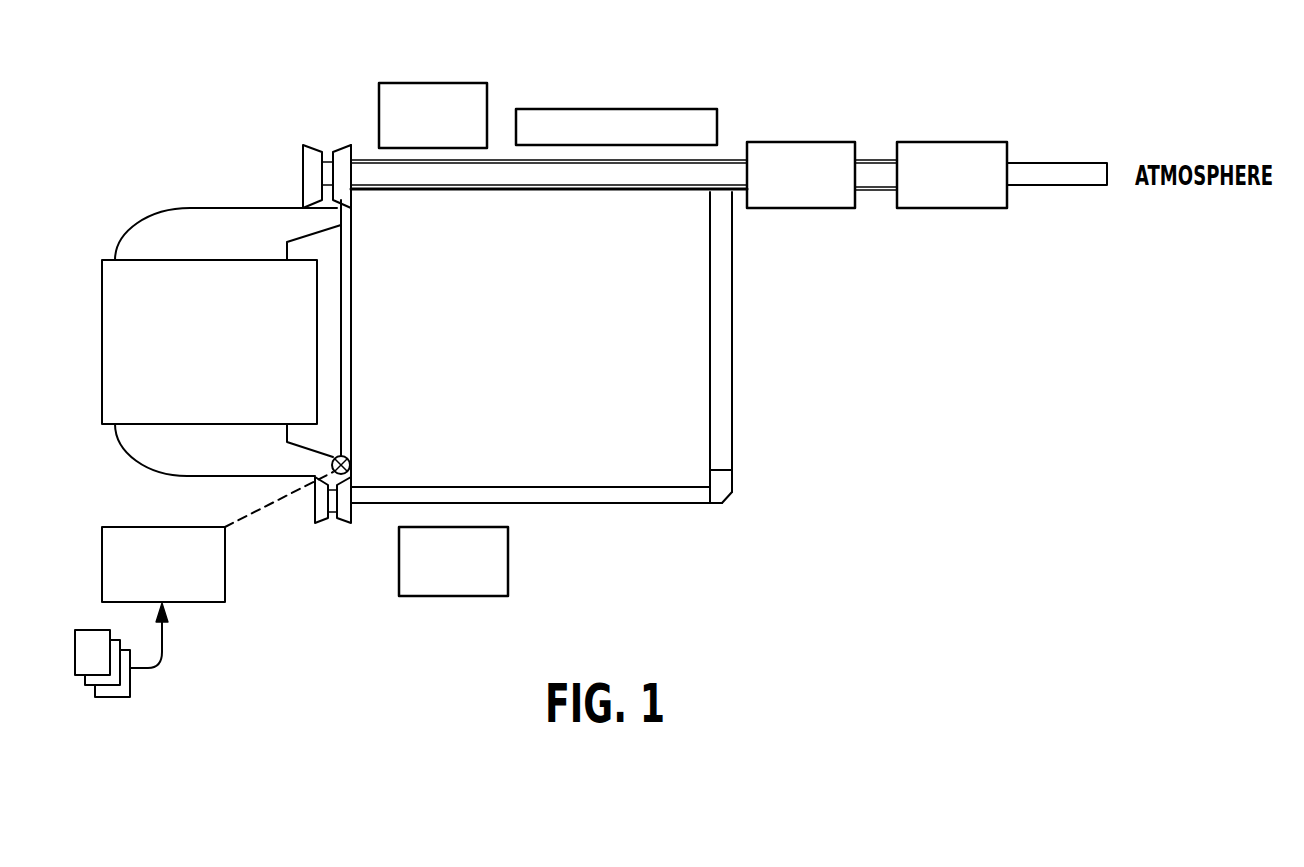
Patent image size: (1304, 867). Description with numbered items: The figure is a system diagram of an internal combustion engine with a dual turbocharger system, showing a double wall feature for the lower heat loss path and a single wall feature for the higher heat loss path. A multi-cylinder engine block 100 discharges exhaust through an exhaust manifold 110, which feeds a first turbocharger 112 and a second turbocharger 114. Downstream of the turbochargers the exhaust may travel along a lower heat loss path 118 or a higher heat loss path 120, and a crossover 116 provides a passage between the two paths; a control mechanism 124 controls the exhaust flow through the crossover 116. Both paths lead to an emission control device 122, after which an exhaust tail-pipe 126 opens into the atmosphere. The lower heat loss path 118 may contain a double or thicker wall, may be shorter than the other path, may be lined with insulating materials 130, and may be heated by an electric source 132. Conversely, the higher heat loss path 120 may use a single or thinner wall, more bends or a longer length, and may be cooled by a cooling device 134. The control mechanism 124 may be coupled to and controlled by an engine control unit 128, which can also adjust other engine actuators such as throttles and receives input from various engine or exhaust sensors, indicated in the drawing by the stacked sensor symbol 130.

The multi-cylinder engine block 100 is at (225, 354).
The exhaust manifold 110 is at (223, 251).
The first turbocharger 112 is at (311, 160).
The second turbocharger 114 is at (323, 513).
The crossover 116 is at (408, 354).
The lower heat loss path 118 is at (590, 173).
The higher heat loss path 120 is at (573, 493).
The emission control device 122 is at (1005, 217).
The control mechanism 124 is at (352, 463).
The exhaust tail-pipe 126 is at (1055, 175).
The engine control unit 128 is at (178, 579).
The insulating materials / engine or exhaust sensors 130 is at (425, 98).
The electric source 132 is at (622, 118).
The cooling device 134 is at (447, 584).